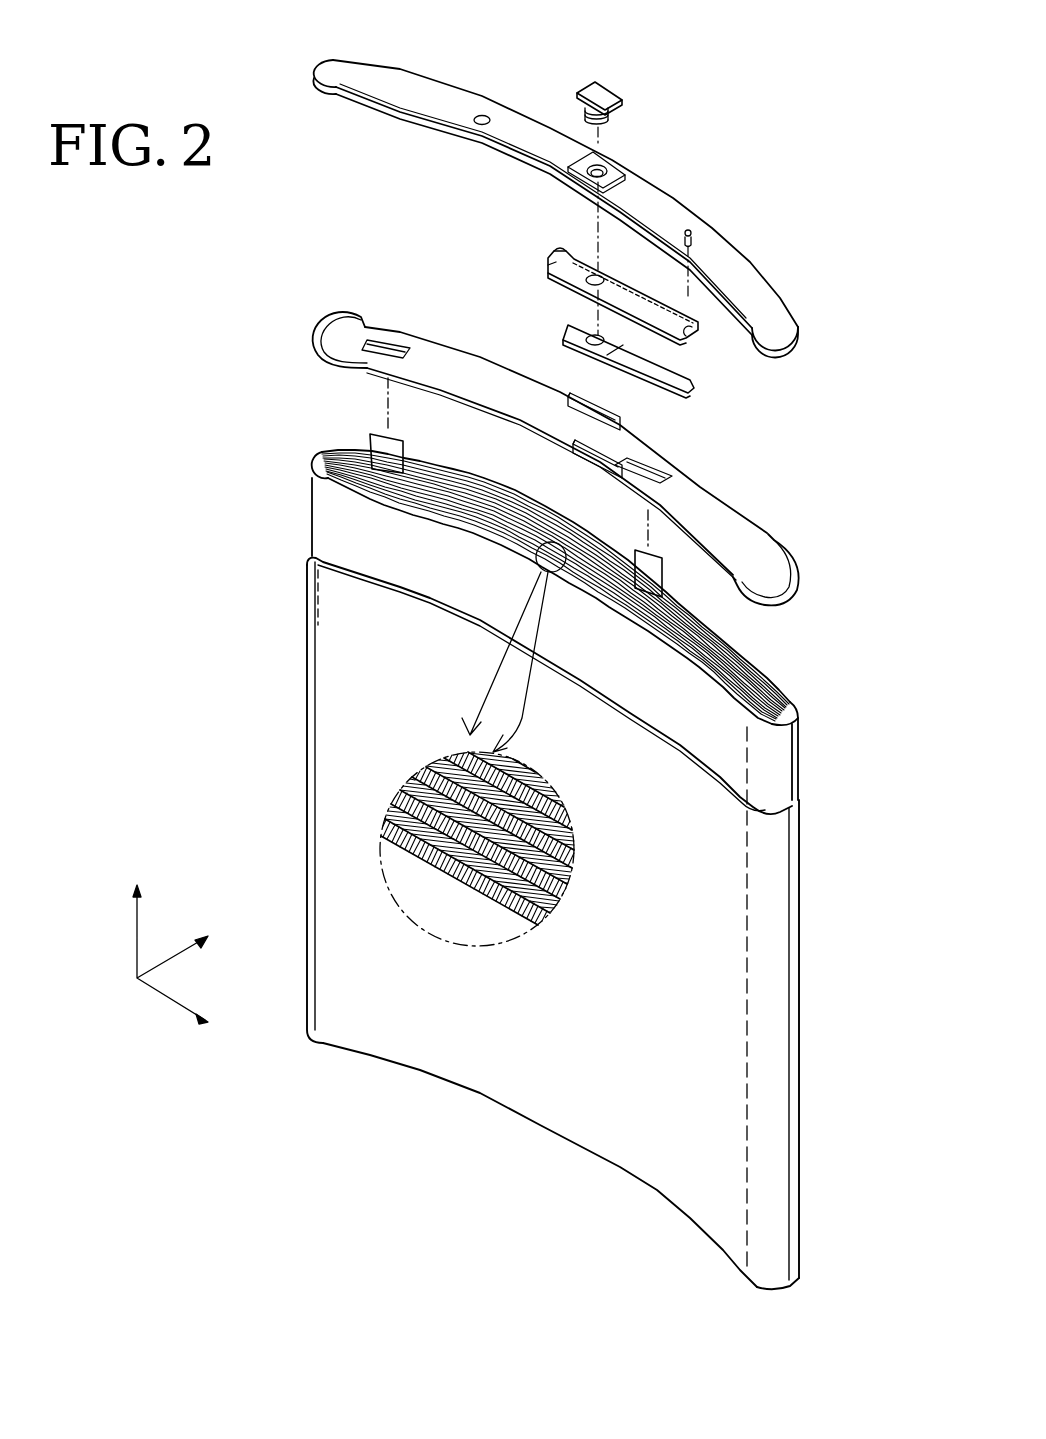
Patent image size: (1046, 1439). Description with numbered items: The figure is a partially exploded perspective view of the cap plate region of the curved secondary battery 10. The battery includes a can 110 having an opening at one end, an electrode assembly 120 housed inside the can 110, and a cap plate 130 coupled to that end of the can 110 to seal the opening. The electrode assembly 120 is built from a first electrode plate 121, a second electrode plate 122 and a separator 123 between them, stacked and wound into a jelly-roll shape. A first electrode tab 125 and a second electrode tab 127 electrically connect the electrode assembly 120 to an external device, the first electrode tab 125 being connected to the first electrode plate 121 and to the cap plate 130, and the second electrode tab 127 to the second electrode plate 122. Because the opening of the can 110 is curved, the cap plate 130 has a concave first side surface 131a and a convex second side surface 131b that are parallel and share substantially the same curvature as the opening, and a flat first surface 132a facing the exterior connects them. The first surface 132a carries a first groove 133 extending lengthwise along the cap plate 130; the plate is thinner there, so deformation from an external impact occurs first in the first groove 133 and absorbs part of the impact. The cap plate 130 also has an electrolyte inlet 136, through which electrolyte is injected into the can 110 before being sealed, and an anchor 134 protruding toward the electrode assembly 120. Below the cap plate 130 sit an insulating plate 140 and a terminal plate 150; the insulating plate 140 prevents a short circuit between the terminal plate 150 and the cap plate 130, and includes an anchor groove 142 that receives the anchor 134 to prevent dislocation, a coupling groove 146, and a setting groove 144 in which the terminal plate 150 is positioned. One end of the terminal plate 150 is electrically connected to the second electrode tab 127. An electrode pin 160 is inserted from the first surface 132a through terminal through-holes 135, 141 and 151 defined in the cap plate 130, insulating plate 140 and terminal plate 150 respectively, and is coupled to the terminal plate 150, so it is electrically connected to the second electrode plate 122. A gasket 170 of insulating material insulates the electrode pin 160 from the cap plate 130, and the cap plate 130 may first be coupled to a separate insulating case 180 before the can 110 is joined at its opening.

The curved secondary battery 10 is at (778, 28).
The can 110 is at (800, 915).
The electrode assembly 120 is at (798, 765).
The first electrode plate 121 is at (573, 836).
The second electrode plate 122 is at (566, 878).
The separator 123 is at (571, 860).
The first electrode tab 125 is at (372, 437).
The second electrode tab 127 is at (640, 553).
The cap plate 130 is at (309, 63).
The first side surface 131a is at (372, 115).
The second side surface 131b is at (673, 200).
The first surface 132a is at (757, 282).
The first groove 133 is at (368, 93).
The anchor 134 is at (693, 233).
The terminal through-hole 135 is at (590, 180).
The electrolyte inlet 136 is at (482, 113).
The insulating plate 140 is at (698, 330).
The terminal through-hole 141 is at (572, 278).
The anchor groove 142 is at (690, 335).
The setting groove 144 is at (546, 267).
The coupling groove 146 is at (558, 254).
The terminal plate 150 is at (700, 390).
The terminal through-hole 151 is at (577, 340).
The electrode pin 160 is at (622, 98).
The gasket 170 is at (575, 158).
The insulating case 180 is at (760, 565).